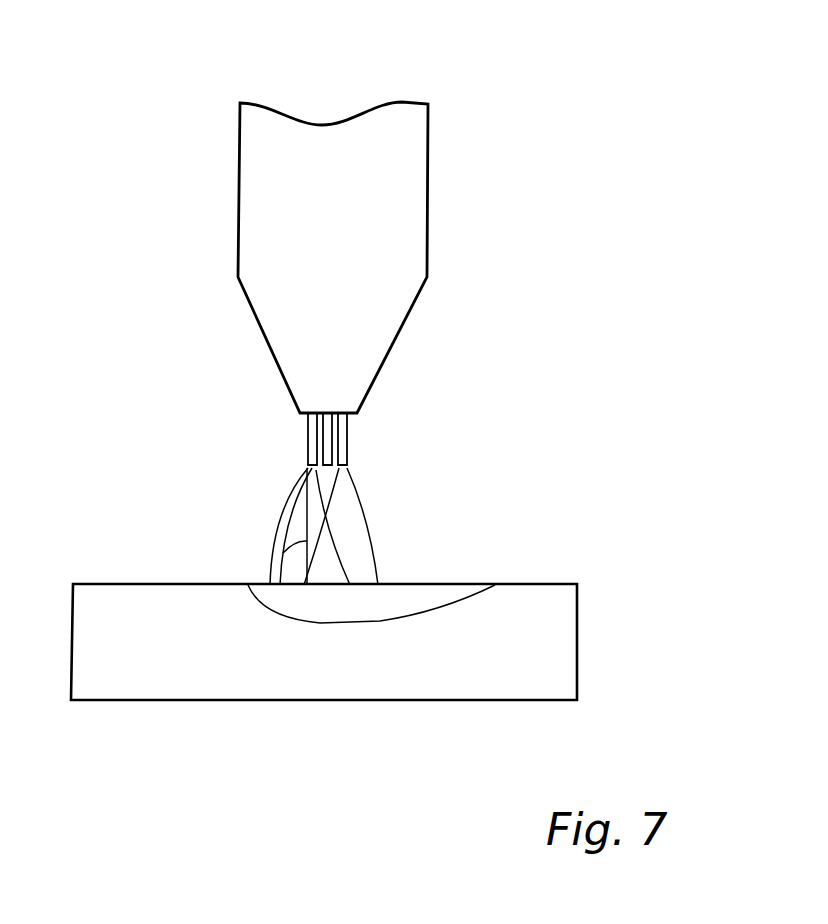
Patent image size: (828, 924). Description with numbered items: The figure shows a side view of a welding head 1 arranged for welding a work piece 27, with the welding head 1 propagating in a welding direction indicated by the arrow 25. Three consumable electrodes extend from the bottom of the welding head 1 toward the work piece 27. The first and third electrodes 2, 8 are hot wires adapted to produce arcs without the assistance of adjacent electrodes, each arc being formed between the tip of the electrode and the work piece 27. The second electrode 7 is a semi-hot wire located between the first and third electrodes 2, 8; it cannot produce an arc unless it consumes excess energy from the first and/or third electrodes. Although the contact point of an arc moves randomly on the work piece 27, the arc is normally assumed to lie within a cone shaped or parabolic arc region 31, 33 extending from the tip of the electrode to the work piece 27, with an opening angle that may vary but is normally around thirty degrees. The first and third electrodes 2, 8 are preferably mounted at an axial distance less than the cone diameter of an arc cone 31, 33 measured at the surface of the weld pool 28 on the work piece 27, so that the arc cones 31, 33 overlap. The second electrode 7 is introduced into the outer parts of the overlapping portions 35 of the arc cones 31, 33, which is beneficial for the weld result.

The welding head 1 is at (484, 180).
The first electrode 2 is at (309, 445).
The second electrode 7 is at (330, 432).
The third electrode 8 is at (347, 455).
The arrow 25 is at (422, 50).
The work piece 27 is at (324, 642).
The weld pool 28 is at (403, 608).
The arc region 31 is at (285, 527).
The arc region 33 is at (363, 558).
The overlapping portions 35 is at (327, 528).